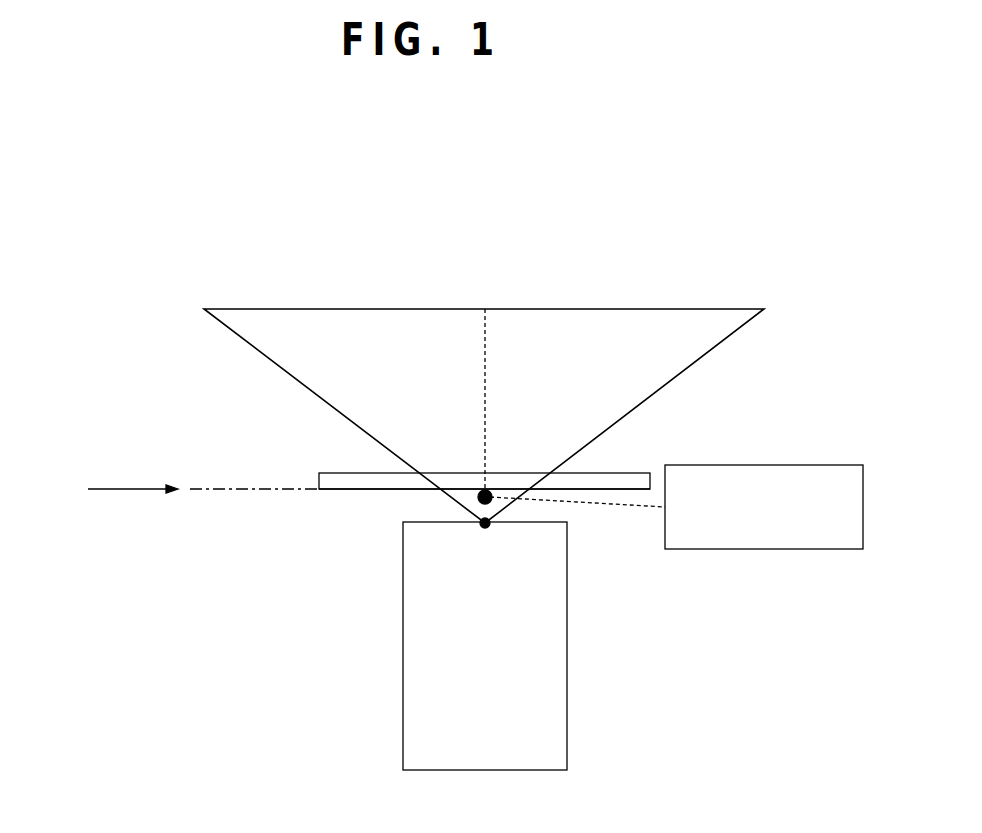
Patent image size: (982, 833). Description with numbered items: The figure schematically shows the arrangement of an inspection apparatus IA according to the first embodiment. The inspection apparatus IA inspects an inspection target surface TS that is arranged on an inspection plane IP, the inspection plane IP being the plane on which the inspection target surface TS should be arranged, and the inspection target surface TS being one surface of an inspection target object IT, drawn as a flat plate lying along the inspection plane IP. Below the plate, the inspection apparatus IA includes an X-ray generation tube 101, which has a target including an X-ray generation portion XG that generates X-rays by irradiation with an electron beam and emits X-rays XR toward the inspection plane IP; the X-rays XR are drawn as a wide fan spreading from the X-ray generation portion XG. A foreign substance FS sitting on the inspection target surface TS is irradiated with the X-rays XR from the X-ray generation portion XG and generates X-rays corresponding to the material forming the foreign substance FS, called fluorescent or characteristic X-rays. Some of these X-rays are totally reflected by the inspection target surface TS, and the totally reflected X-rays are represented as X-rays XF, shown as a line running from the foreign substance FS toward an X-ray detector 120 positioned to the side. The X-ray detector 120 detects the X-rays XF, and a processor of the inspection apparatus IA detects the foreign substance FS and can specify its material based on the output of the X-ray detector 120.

The inspection apparatus IA is at (190, 212).
The X-rays XR is at (617, 330).
The inspection target object IT is at (340, 471).
The inspection plane IP is at (188, 490).
The inspection target surface TS is at (372, 496).
The foreign substance FS is at (480, 490).
The X-ray generation portion XG is at (483, 528).
The X-rays (totally reflected fluorescent X-rays) XF is at (625, 503).
The X-ray detector 120 is at (807, 549).
The X-ray generation tube 101 is at (567, 695).